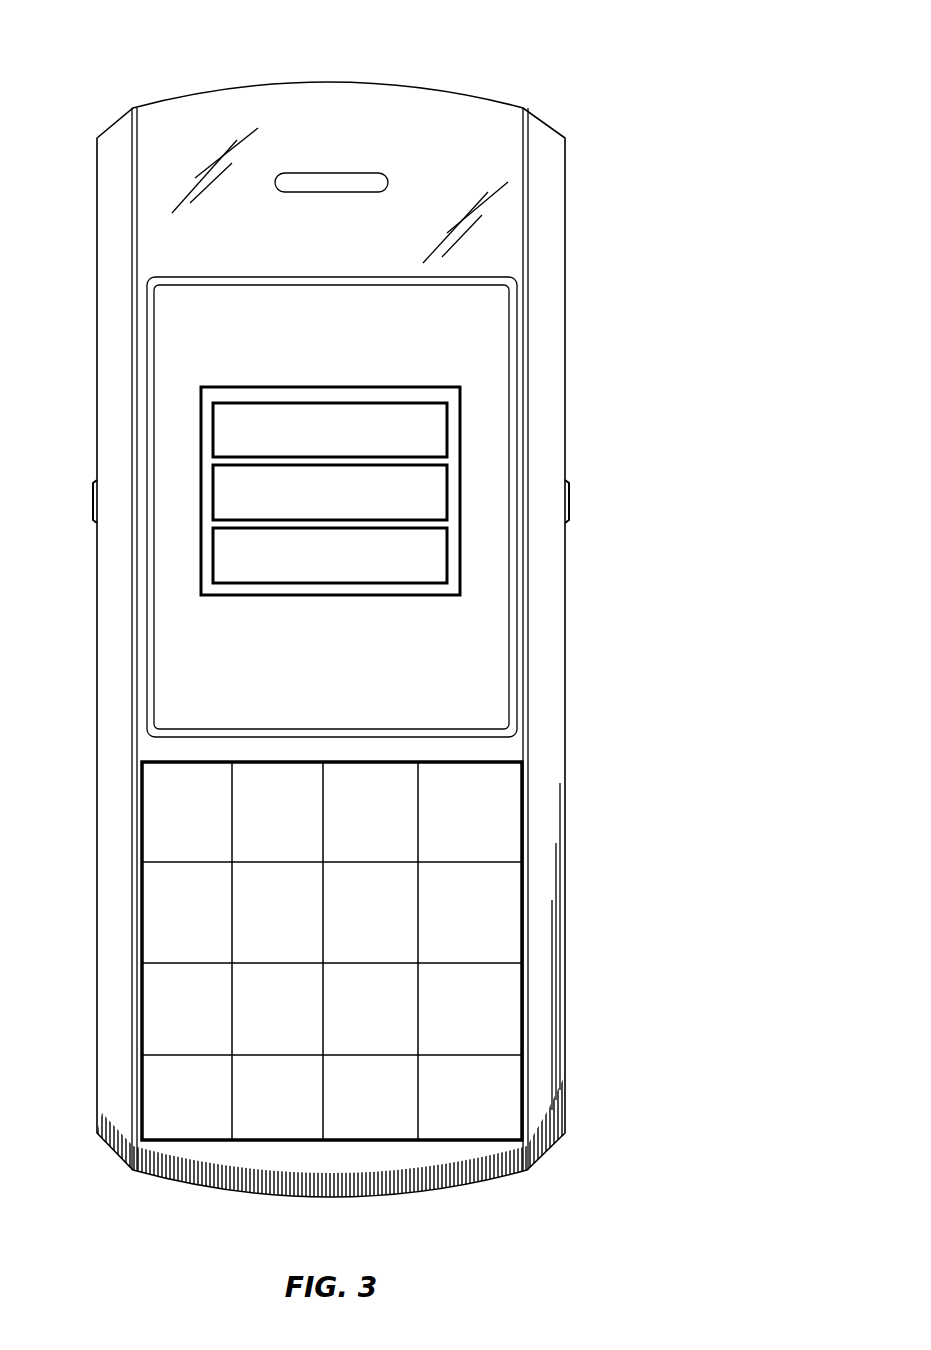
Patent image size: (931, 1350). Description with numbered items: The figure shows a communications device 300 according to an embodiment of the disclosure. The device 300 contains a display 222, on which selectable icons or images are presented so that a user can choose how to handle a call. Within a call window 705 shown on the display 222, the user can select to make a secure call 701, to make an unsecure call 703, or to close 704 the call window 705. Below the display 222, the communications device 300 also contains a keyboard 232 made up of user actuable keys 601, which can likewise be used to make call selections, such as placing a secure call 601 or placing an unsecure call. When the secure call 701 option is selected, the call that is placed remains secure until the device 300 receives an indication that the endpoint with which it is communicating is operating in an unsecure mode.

The communications device 300 is at (510, 42).
The display 222 is at (482, 337).
The call window 705 is at (182, 401).
The secure call 701 is at (447, 420).
The unsecure call 703 is at (447, 487).
The close 704 is at (447, 553).
The keyboard 232 is at (483, 1150).
The user actuable keys 601 is at (530, 776).